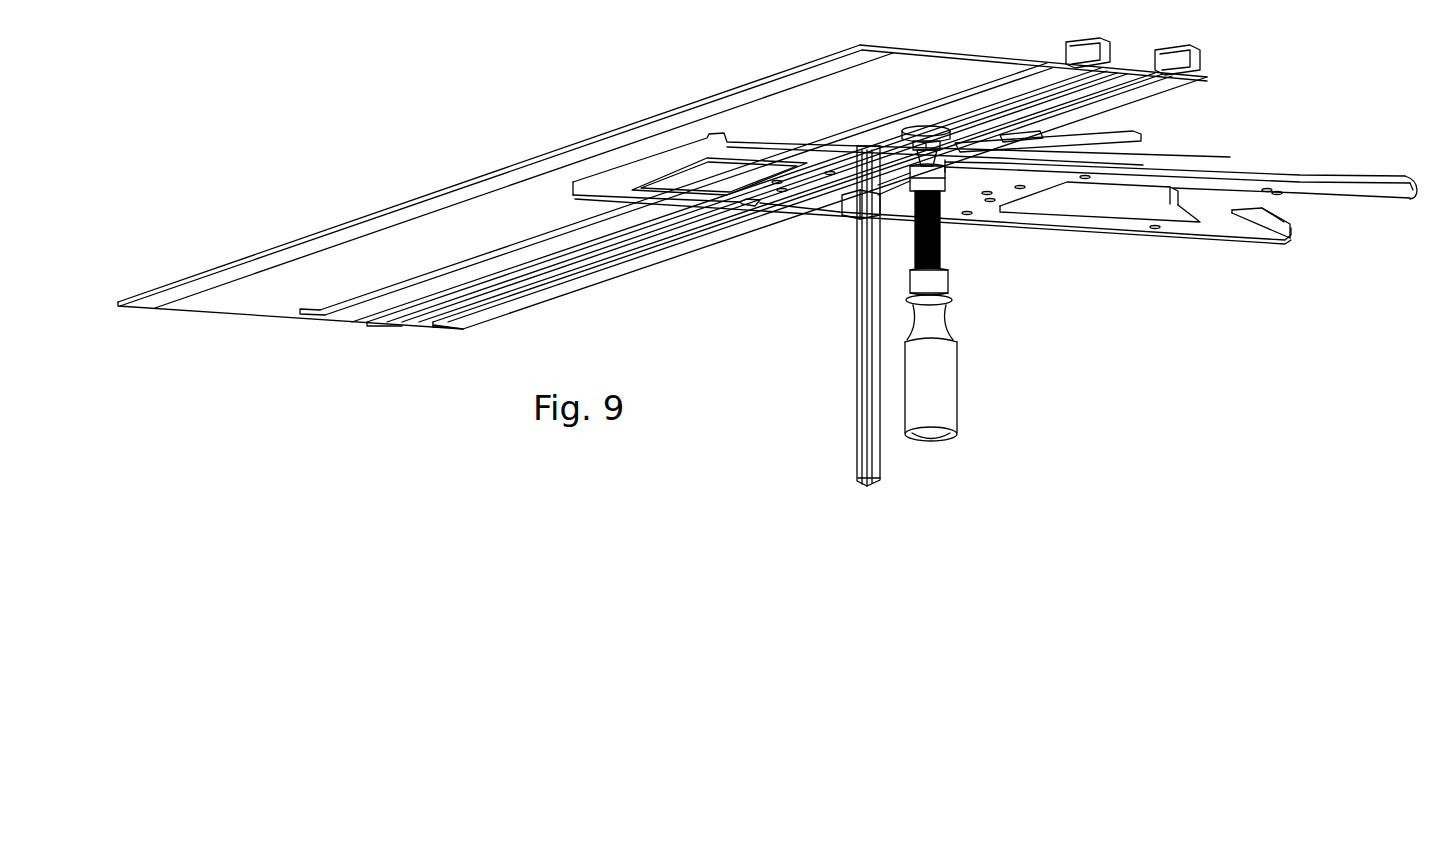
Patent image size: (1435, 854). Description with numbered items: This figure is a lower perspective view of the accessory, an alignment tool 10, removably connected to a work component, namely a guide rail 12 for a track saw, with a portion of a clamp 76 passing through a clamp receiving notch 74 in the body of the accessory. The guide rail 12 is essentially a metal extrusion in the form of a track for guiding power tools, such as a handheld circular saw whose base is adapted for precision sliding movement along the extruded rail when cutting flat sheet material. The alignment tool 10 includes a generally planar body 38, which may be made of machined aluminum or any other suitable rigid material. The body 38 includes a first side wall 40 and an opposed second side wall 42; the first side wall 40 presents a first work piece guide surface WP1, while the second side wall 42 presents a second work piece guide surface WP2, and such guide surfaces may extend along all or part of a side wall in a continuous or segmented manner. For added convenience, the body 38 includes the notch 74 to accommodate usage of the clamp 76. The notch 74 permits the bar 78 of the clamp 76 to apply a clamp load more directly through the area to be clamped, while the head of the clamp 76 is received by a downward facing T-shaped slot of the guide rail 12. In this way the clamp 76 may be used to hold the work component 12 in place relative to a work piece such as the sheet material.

The alignment tool 10 is at (995, 288).
The guide rail 12 is at (470, 171).
The body 38 is at (1265, 238).
The first side wall 40 is at (1205, 170).
The second side wall 42 is at (1125, 232).
The notch 74 is at (746, 207).
The clamp 76 is at (848, 348).
The bar 78 is at (858, 443).
The first work piece guide surface WP1 is at (1310, 178).
The second work piece guide surface WP2 is at (1218, 240).